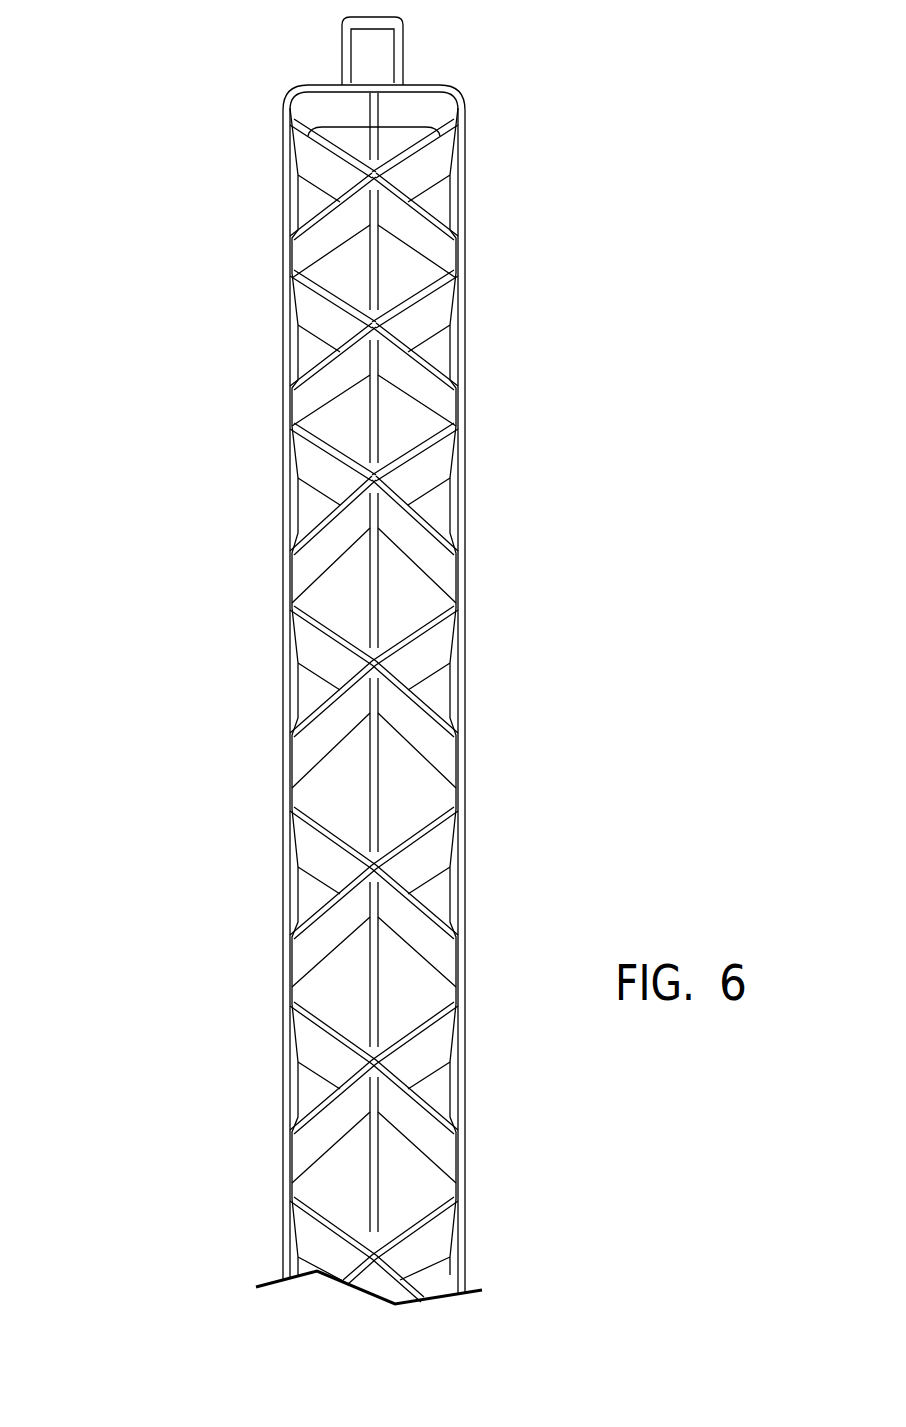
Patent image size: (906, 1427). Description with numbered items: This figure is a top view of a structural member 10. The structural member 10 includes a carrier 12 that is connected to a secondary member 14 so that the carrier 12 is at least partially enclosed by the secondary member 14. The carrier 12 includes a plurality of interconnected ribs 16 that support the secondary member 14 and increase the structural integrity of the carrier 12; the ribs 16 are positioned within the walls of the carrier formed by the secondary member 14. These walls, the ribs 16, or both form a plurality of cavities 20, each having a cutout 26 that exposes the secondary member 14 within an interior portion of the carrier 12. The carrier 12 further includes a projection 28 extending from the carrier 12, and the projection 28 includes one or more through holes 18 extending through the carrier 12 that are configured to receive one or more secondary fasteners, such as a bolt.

The structural member 10 is at (175, 272).
The carrier 12 is at (290, 400).
The secondary member 14 is at (340, 612).
The interconnected ribs 16 is at (413, 540).
The through holes 18 is at (372, 50).
The cavities 20 is at (413, 600).
The cutout 26 is at (330, 568).
The projection 28 is at (455, 36).